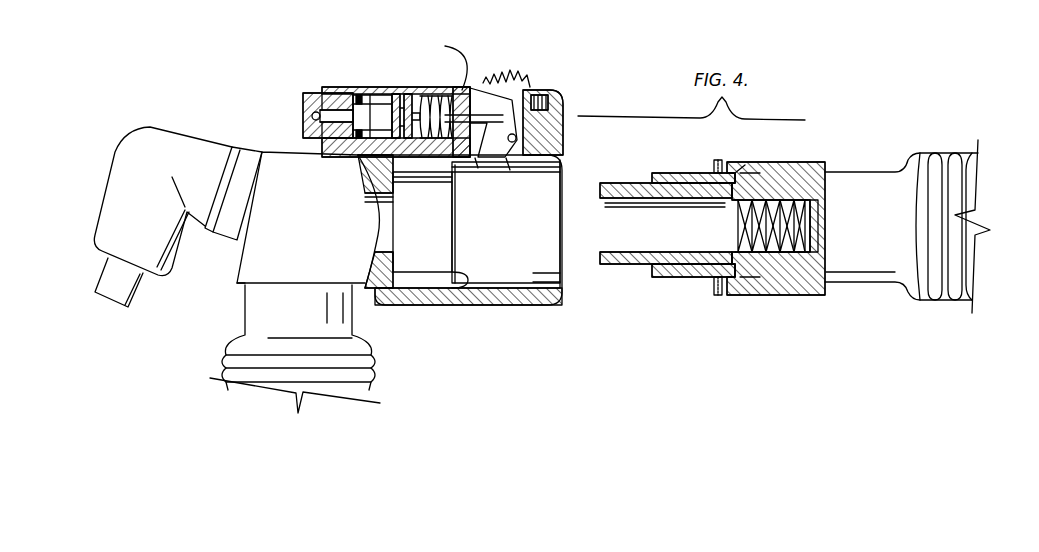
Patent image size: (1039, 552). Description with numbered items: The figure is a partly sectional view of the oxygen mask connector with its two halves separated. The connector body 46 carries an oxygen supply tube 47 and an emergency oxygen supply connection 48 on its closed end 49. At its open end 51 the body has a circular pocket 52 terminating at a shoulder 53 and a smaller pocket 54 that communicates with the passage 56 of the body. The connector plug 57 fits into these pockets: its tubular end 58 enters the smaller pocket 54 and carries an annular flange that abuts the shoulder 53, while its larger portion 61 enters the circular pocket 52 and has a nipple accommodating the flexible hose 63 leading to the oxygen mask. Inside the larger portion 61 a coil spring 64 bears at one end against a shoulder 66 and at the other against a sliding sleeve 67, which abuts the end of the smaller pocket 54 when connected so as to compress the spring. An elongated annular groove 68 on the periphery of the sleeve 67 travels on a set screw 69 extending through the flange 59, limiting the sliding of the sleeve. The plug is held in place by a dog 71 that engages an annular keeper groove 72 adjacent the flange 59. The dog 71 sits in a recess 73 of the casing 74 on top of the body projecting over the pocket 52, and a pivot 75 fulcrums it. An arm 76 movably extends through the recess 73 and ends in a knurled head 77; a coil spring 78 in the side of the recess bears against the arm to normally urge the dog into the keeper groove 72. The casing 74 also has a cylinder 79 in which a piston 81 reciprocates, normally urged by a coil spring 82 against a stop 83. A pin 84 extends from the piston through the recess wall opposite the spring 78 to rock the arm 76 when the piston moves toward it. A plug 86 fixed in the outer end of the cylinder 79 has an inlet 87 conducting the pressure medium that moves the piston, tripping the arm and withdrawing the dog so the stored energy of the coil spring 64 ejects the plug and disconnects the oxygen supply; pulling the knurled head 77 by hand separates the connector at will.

The connector body 46 is at (302, 226).
The oxygen supply tube 47 is at (373, 352).
The emergency oxygen supply connection 48 is at (110, 206).
The closed end 49 is at (237, 276).
The open end 51 is at (562, 300).
The circular pocket 52 is at (560, 276).
The shoulder 53 is at (463, 293).
The smaller pocket 54 is at (448, 252).
The passage 56 is at (393, 223).
The connector plug 57 is at (846, 146).
The tubular end 58 is at (672, 278).
The flange 59 is at (735, 165).
The larger portion 61 is at (768, 297).
The flexible hose 63 is at (938, 152).
The coil spring 64 is at (812, 237).
The shoulder 66 is at (818, 210).
The sliding sleeve 67 is at (632, 182).
The elongated annular groove 68 is at (690, 172).
The set screw 69 is at (718, 160).
The dog 71 is at (479, 170).
The annular keeper groove 72 is at (745, 168).
The recess 73 is at (508, 170).
The casing 74 is at (460, 90).
The pivot 75 is at (516, 138).
The arm 76 is at (510, 108).
The knurled head 77 is at (507, 76).
The coil spring 78 is at (540, 94).
The cylinder 79 is at (366, 102).
The piston 81 is at (394, 92).
The coil spring 82 is at (424, 92).
The stop 83 is at (355, 152).
The pin 84 is at (447, 58).
The plug 86 is at (322, 92).
The orifice 87 is at (311, 116).